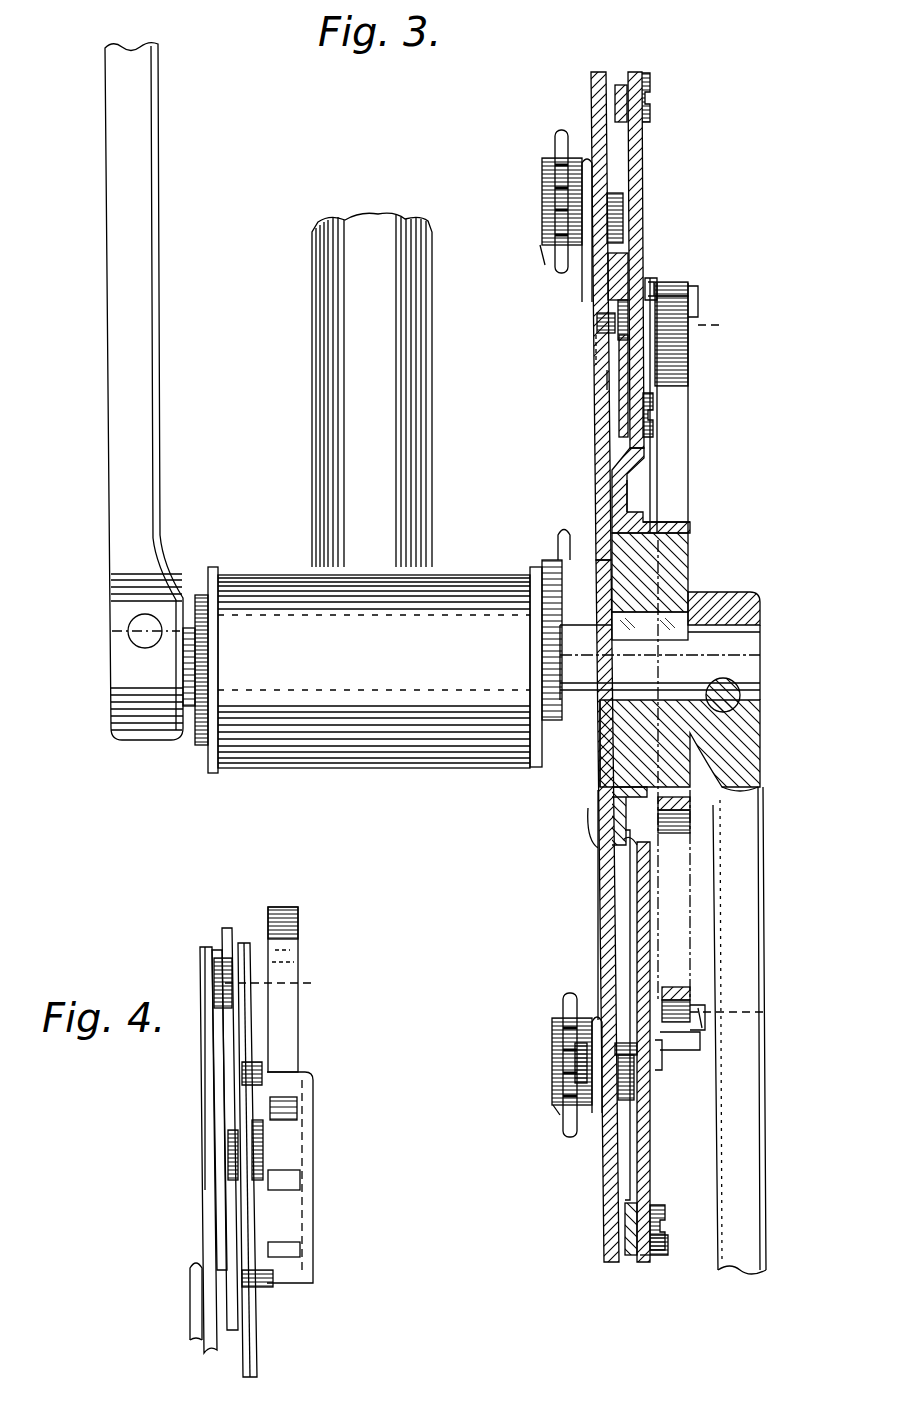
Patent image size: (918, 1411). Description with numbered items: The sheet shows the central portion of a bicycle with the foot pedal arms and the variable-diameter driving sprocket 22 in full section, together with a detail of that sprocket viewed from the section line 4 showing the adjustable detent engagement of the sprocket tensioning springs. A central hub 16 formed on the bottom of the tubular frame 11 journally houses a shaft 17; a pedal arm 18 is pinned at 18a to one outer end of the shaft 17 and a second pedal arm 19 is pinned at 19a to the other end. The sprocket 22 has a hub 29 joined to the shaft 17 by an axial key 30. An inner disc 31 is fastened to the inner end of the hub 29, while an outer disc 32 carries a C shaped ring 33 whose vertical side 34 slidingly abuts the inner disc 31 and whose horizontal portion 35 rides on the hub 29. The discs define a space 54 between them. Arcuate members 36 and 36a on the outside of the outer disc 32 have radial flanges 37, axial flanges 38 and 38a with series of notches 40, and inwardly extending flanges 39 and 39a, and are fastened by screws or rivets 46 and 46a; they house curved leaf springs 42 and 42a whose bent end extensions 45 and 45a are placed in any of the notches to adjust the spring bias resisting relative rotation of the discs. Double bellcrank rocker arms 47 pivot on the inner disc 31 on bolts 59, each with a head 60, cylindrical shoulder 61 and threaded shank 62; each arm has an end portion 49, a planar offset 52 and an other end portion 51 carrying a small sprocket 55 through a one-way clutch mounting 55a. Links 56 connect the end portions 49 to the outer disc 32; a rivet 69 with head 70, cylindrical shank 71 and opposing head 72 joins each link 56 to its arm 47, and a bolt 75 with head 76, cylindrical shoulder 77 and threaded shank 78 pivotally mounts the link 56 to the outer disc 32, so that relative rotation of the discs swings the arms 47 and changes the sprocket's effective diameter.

In FIG. 3, the section line 4- 4 is at (712, 55).
In FIG. 3, the tubular frame 11 is at (330, 390).
In FIG. 3, the central hub 16 is at (396, 664).
In FIG. 3, the shaft 17 is at (760, 652).
In FIG. 3, the pedal arm 18 is at (122, 398).
In FIG. 3, the pin 18a is at (143, 642).
In FIG. 3, the pedal arm 19 is at (750, 922).
In FIG. 3, the pin 19a is at (740, 700).
In FIG. 3, the driving sprocket 22 is at (600, 1220).
In FIG. 3, the hub 29 is at (690, 562).
In FIG. 3, the key 30 is at (646, 640).
In FIG. 3, the inner disc 31 is at (580, 108).
In FIG. 4, the inner disc 31 is at (202, 956).
In FIG. 3, the outer disc 32 is at (654, 164).
In FIG. 4, the outer disc 32 is at (243, 943).
In FIG. 3, the C shaped annular internal ring 33 is at (652, 490).
In FIG. 3, the vertical side 34 is at (628, 512).
In FIG. 3, the horizontal portion 35 is at (690, 528).
In FIG. 3, the arcuate member 36 is at (670, 290).
In FIG. 4, the arcuate member 36 is at (326, 1076).
In FIG. 3, the arcuate member 36a is at (700, 1048).
In FIG. 4, the radial flange 37 is at (255, 1092).
In FIG. 3, the axial flange 38 is at (690, 334).
In FIG. 4, the axial flange 38 is at (293, 1140).
In FIG. 3, the axial flange 38a is at (766, 1010).
In FIG. 3, the radially inward flange 39 is at (722, 325).
In FIG. 3, the radially inward flange 39a is at (706, 1018).
In FIG. 4, the notches 40 is at (300, 1245).
In FIG. 3, the curved leaf spring 42 is at (690, 418).
In FIG. 4, the curved leaf spring 42 is at (292, 945).
In FIG. 3, the curved leaf spring 42a is at (690, 990).
In FIG. 3, the bent end extension 45 is at (698, 302).
In FIG. 4, the bent end extension 45 is at (298, 1106).
In FIG. 3, the bent end extension 45a is at (700, 1026).
In FIG. 3, the screw or rivet 46 is at (652, 278).
In FIG. 4, the screw or rivet 46 is at (272, 1287).
In FIG. 3, the screw or rivet 46a is at (700, 1075).
In FIG. 3, the rocker arm 47 is at (570, 305).
In FIG. 4, the rocker arm 47 is at (177, 1296).
In FIG. 4, the end portion 49 is at (220, 1182).
In FIG. 3, the other end portion 51 is at (596, 1018).
In FIG. 4, the other end portion 51 is at (190, 1327).
In FIG. 4, the planar offset 52 is at (210, 1258).
In FIG. 3, the space 54 is at (608, 135).
In FIG. 3, the small sprocket 55 is at (556, 160).
In FIG. 3, the mounting means 55a is at (556, 250).
In FIG. 3, the link 56 is at (630, 380).
In FIG. 4, the link 56 is at (227, 928).
In FIG. 3, the bolt 59 is at (615, 365).
In FIG. 3, the head 60 is at (628, 325).
In FIG. 3, the cylindrical shoulder 61 is at (605, 330).
In FIG. 3, the threaded shank 62 is at (597, 322).
In FIG. 3, the rivet 69 is at (620, 225).
In FIG. 4, the rivet 69 is at (282, 983).
In FIG. 3, the head 70 is at (598, 1112).
In FIG. 3, the cylindrical shank 71 is at (633, 1090).
In FIG. 3, the opposing head 72 is at (640, 1075).
In FIG. 3, the bolt or rivet 75 is at (662, 104).
In FIG. 3, the head 76 is at (640, 100).
In FIG. 3, the cylindrical shoulder 77 is at (645, 1265).
In FIG. 3, the threaded shank 78 is at (632, 1262).